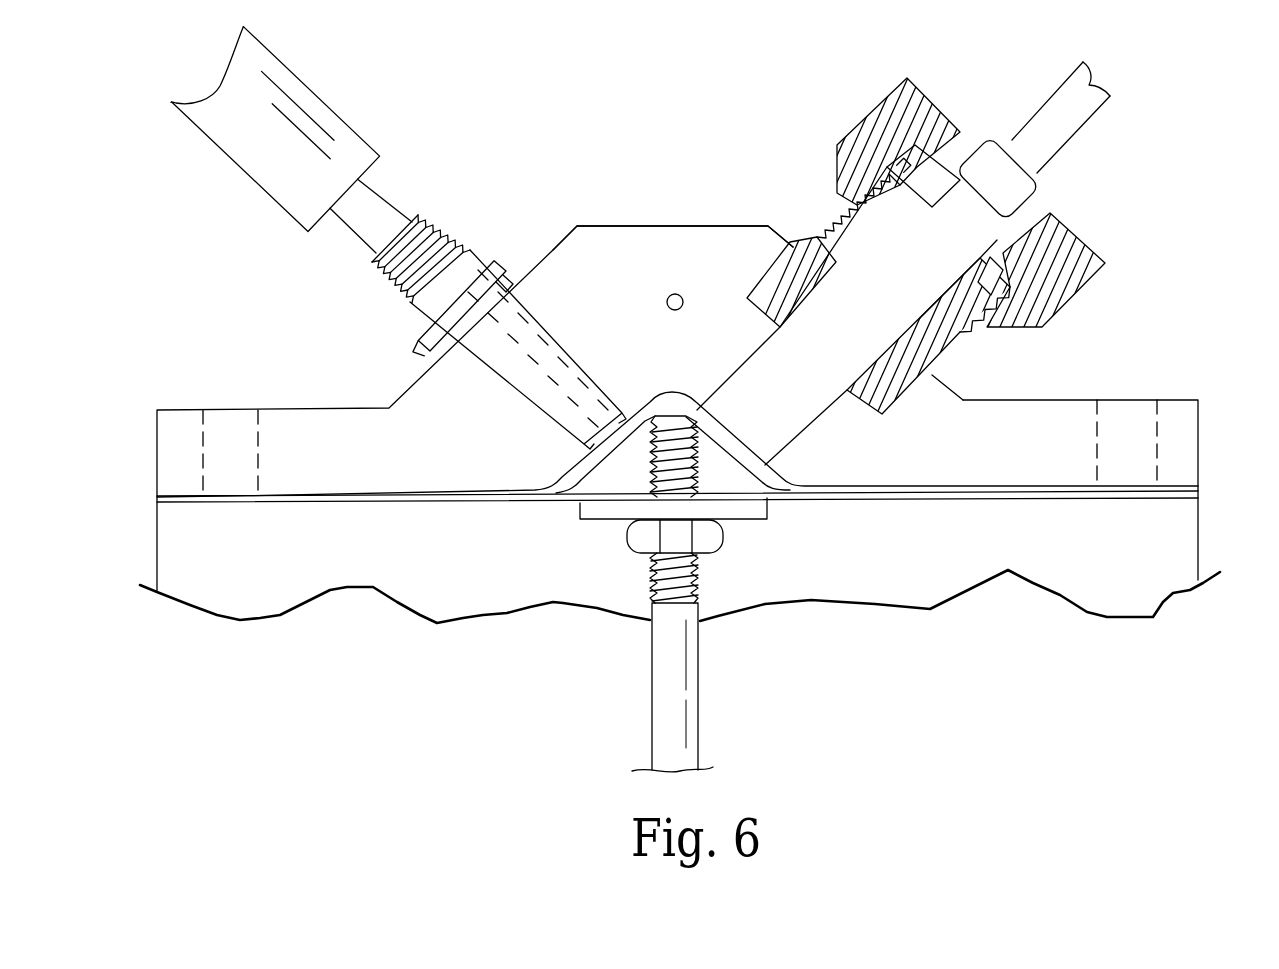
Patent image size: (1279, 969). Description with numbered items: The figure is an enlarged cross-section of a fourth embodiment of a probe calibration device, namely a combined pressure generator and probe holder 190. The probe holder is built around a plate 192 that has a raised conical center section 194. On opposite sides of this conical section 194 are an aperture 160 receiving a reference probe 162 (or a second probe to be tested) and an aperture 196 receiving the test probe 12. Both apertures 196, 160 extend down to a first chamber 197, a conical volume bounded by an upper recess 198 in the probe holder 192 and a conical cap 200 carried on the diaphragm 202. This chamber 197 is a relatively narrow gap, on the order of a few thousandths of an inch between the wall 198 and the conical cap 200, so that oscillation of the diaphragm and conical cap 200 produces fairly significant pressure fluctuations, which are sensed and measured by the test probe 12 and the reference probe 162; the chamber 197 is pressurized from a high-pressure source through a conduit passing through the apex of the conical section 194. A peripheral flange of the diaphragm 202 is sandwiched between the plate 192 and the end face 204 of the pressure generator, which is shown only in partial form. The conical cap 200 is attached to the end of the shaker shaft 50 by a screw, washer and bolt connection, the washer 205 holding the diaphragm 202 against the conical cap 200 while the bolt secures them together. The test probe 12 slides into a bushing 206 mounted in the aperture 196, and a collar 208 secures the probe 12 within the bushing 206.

The test probe 12 is at (807, 386).
The shaker shaft 50 is at (672, 697).
The aperture 160 is at (548, 340).
The reference probe 162 is at (435, 350).
The combined pressure generator and probe holder 190 is at (161, 344).
The plate 192 is at (1186, 425).
The raised conical center section 194 is at (658, 247).
The aperture 196 is at (838, 405).
The first chamber 197 is at (540, 502).
The upper recess 198 is at (646, 403).
The conical cap 200 is at (738, 467).
The diaphragm 202 is at (888, 497).
The end face 204 is at (1098, 497).
The washer 205 is at (582, 504).
The bushing 206 is at (822, 255).
The collar 208 is at (1053, 240).